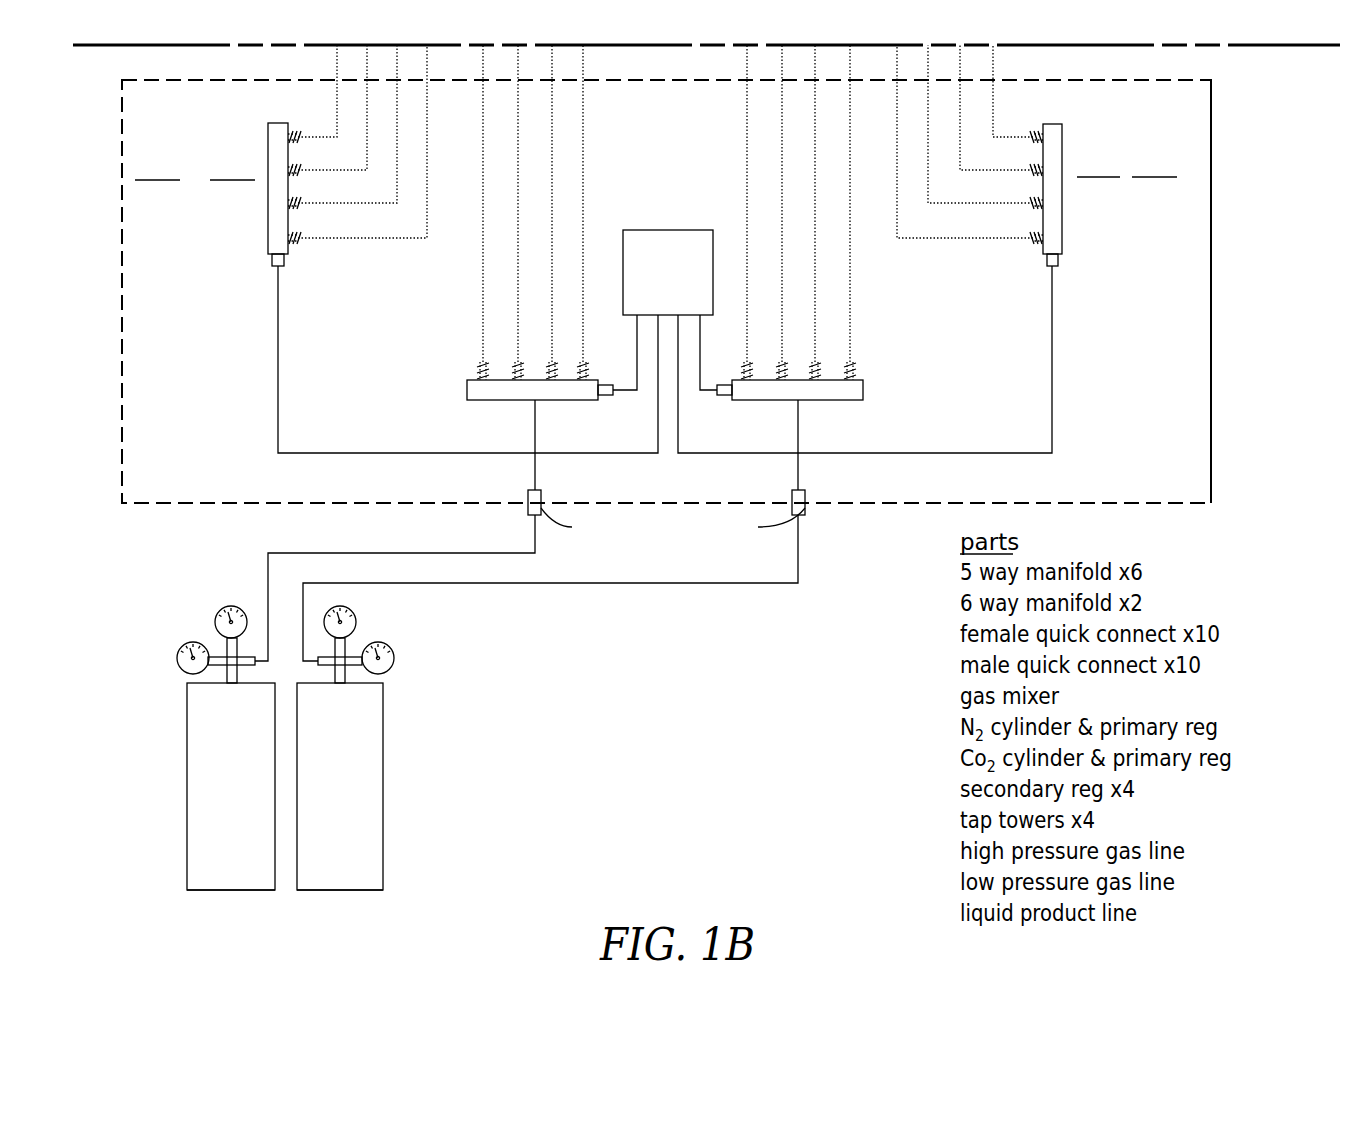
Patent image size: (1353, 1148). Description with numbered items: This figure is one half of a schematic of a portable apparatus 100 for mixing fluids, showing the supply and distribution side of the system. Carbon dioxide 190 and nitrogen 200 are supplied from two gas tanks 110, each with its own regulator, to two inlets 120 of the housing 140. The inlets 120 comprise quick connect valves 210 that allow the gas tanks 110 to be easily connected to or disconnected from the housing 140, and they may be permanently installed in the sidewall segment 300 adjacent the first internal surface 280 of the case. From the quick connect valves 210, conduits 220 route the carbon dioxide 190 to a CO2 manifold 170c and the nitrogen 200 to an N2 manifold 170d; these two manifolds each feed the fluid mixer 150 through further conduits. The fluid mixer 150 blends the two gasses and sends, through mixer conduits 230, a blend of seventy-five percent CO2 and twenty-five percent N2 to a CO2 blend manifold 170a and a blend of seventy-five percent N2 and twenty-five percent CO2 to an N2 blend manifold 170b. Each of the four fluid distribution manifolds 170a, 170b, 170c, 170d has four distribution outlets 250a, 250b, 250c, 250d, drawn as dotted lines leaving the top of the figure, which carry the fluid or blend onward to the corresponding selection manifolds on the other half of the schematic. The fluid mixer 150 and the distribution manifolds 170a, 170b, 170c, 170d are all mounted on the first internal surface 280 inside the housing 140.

The apparatus 100 is at (832, 847).
The gas tanks 110 is at (265, 890).
The inlets 120 is at (528, 510).
The housing 140 is at (122, 302).
The fluid mixer 150 is at (668, 230).
The CO2 blend manifold 170a is at (272, 123).
The N2 blend manifold 170b is at (1053, 124).
The CO2 manifold 170c is at (550, 400).
The N2 manifold 170d is at (783, 400).
The carbon dioxide 190 is at (187, 735).
The nitrogen 200 is at (383, 752).
The quick connect valves 210 is at (542, 497).
The conduits 220 is at (535, 480).
The mixer conduits 230 is at (278, 368).
The distribution outlet 250a is at (293, 135).
The distribution outlet 250b is at (297, 170).
The distribution outlet 250c is at (298, 203).
The distribution outlet 250d is at (298, 238).
The first internal surface 280 is at (1130, 310).
The sidewall segment 300 is at (1213, 293).